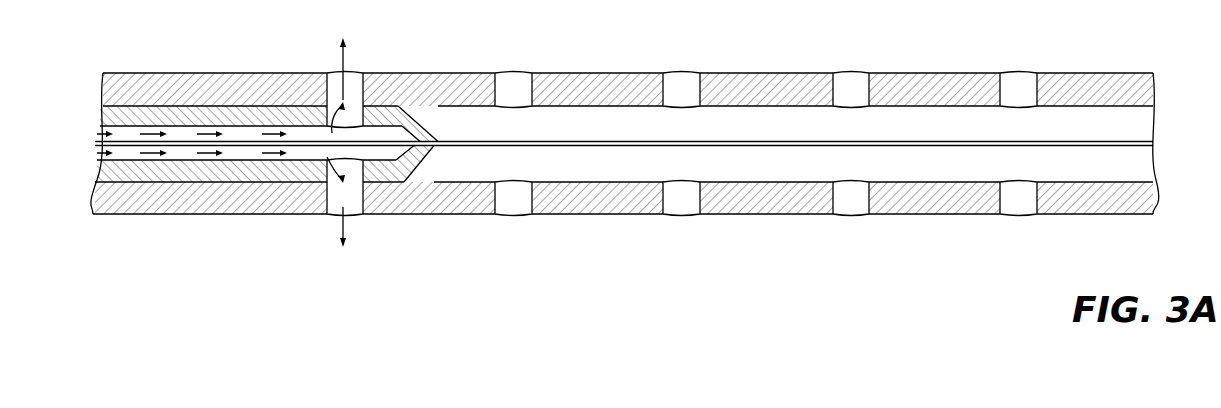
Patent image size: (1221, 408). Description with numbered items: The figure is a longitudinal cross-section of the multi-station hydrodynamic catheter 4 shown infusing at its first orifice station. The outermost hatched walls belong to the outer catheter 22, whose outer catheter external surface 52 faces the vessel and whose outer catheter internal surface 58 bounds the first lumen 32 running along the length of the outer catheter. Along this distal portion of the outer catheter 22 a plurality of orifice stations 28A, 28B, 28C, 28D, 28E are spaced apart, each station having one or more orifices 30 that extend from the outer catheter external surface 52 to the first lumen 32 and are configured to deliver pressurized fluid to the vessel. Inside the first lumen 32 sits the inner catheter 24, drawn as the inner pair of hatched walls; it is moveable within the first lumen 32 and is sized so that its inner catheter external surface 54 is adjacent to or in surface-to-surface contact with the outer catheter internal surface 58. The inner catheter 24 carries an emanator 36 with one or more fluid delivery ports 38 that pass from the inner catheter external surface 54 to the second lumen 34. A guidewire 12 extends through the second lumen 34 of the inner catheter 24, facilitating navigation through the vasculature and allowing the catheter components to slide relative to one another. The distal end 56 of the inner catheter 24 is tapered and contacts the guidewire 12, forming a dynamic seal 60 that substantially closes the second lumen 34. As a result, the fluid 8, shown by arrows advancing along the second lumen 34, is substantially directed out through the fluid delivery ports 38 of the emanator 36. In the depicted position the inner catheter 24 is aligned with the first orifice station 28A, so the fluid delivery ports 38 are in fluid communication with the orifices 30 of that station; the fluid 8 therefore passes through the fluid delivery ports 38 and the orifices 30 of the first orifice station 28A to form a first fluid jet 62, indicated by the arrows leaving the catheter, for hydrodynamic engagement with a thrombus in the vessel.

The multi-station hydrodynamic catheter 4 is at (492, 31).
The fluid 8 is at (150, 153).
The guidewire 12 is at (710, 140).
The outer catheter 22 is at (138, 80).
The inner catheter 24 is at (217, 172).
The first orifice station 28A is at (356, 231).
The orifice station 28B is at (515, 222).
The orifice station 28C is at (685, 222).
The orifice station 28D is at (849, 222).
The orifice station 28E is at (1017, 222).
The orifice 30 is at (359, 78).
The first lumen 32 is at (1063, 117).
The second lumen 34 is at (129, 158).
The emanator 36 is at (376, 230).
The fluid delivery port 38 is at (335, 112).
The outer catheter external surface 52 is at (947, 80).
The inner catheter external surface 54 is at (183, 108).
The distal end 56 is at (420, 171).
The outer catheter internal surface 58 is at (785, 110).
The dynamic seal 60 is at (441, 147).
The first fluid jet 62 is at (348, 56).